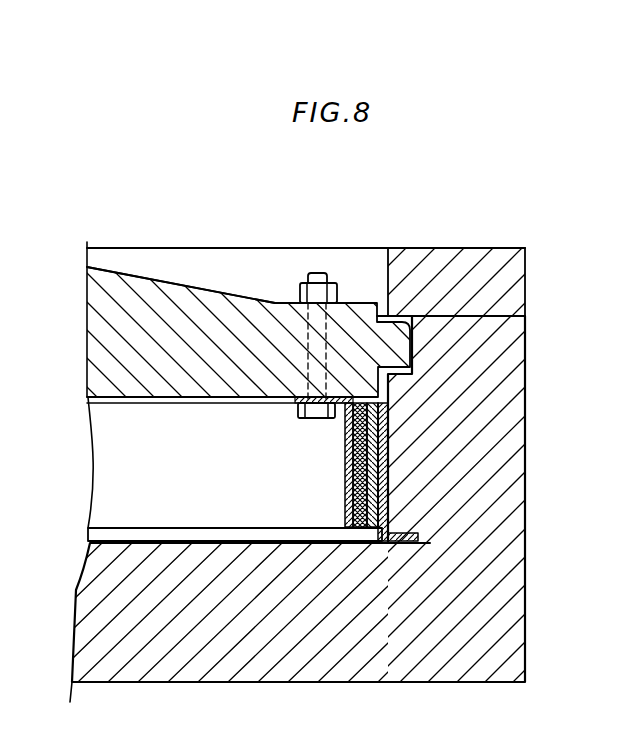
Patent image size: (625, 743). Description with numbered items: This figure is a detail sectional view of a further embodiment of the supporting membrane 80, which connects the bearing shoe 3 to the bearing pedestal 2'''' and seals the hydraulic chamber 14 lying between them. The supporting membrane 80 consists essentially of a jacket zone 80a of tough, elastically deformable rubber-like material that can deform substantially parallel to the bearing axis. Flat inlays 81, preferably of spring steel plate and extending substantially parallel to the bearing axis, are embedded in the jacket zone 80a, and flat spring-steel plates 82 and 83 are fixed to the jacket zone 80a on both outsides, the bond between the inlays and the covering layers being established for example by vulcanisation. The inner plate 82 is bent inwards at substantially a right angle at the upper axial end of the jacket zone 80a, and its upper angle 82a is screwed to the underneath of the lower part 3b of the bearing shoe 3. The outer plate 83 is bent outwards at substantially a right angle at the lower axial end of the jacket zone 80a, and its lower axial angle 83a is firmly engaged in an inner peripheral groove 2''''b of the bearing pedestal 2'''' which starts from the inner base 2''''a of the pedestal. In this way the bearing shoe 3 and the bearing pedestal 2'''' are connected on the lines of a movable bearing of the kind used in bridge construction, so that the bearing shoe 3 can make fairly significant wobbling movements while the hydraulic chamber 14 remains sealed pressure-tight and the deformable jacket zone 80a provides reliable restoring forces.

The bearing shoe 3 is at (160, 275).
The lower part of the bearing shoe 3b is at (194, 302).
The hydraulic chamber 14 is at (122, 459).
The bearing pedestal 2'''' is at (318, 509).
The inner base of the bearing pedestal 2''''a is at (235, 510).
The inner peripheral groove of the bearing pedestal 2''''b is at (426, 516).
The supporting membrane 80 is at (347, 459).
The jacket zone 80a is at (380, 465).
The flat inlays 81 is at (346, 502).
The inner spring-steel plate 82 is at (346, 433).
The upper angle of the inner plate 82a is at (340, 396).
The outer spring-steel plate 83 is at (387, 495).
The lower axial angle of the outer plate 83a is at (400, 545).